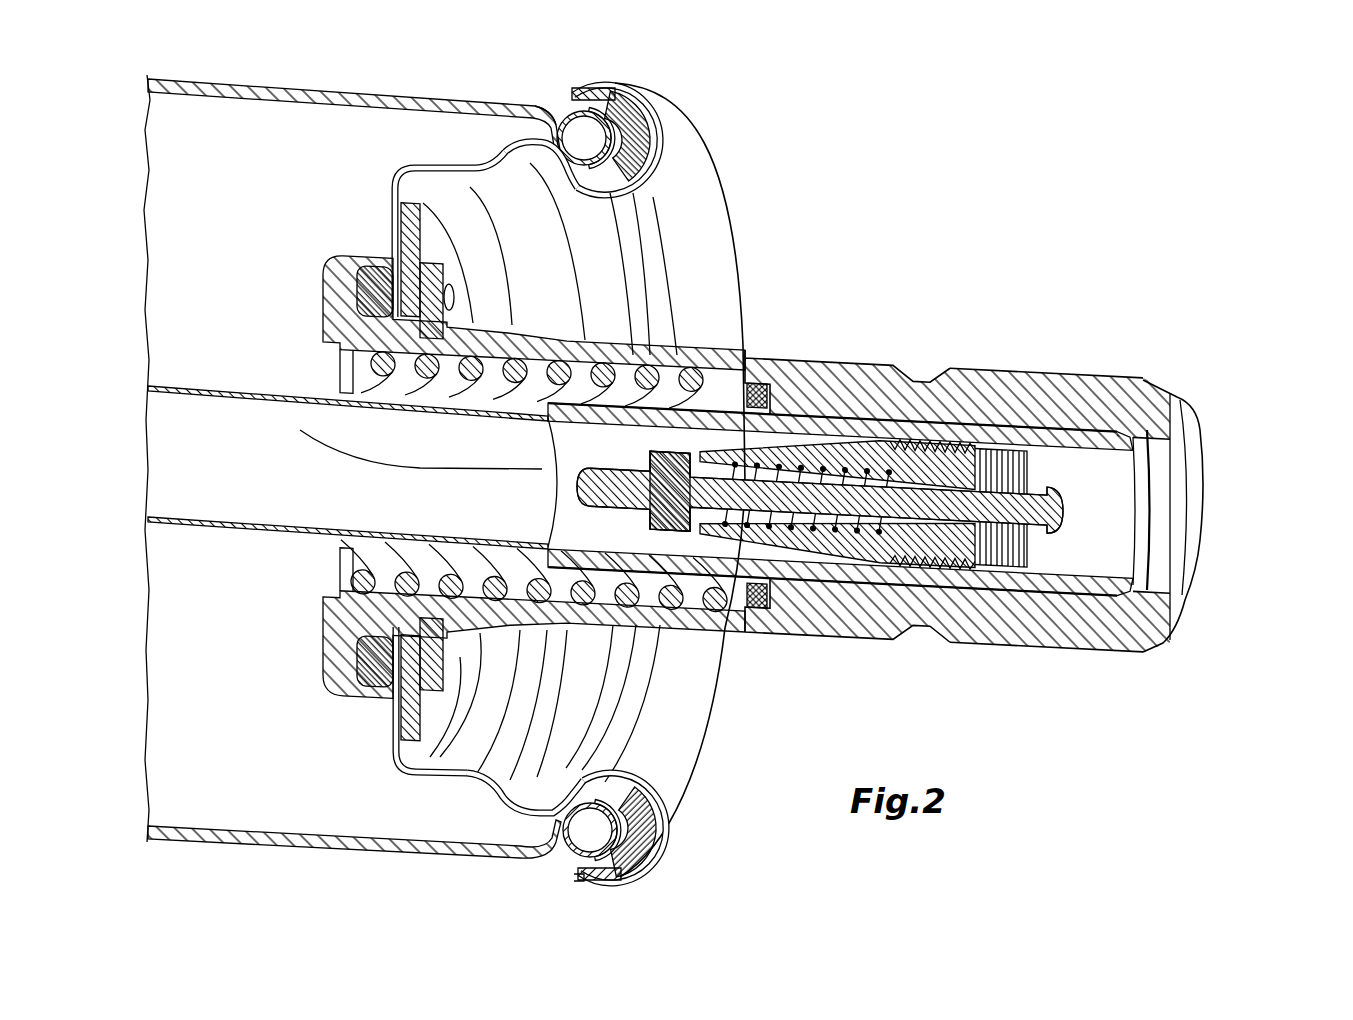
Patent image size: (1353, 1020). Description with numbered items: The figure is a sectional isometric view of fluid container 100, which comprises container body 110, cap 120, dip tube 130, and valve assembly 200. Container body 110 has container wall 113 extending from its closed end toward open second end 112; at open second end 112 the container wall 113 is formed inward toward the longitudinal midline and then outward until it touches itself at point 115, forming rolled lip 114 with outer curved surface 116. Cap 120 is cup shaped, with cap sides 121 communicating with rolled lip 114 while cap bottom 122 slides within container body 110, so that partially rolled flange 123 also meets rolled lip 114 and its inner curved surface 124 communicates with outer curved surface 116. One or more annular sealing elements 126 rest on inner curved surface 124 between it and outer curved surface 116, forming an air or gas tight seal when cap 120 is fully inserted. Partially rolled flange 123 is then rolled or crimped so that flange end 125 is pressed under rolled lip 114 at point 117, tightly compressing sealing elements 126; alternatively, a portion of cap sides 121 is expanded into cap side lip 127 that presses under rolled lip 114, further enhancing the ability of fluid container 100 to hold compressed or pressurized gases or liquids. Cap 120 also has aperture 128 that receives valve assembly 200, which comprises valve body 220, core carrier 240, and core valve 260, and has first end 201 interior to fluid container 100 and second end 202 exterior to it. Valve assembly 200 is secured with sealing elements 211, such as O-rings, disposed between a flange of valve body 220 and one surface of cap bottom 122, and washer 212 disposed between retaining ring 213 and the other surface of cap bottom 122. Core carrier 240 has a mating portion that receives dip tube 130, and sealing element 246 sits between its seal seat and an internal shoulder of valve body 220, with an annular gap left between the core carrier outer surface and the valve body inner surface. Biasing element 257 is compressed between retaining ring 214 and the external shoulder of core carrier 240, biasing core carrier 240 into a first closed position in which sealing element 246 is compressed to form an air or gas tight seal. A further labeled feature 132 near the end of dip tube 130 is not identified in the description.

The fluid container 100 is at (855, 166).
The container body 110 is at (216, 793).
The open second end 112 is at (518, 128).
The container wall 113 is at (305, 846).
The rolled lip 114 is at (556, 118).
The point 115 is at (600, 112).
The outer curved surface 116 is at (645, 142).
The point 117 is at (574, 121).
The cap 120 is at (718, 192).
The cap sides 121 is at (445, 790).
The cap bottom 122 is at (392, 726).
The partially rolled flange 123 is at (650, 824).
The inner curved surface 124 is at (603, 870).
The flange end 125 is at (577, 876).
The sealing elements 126 is at (648, 800).
The cap side lip 127 is at (515, 823).
The aperture 128 is at (360, 622).
The dip tube 130 is at (185, 393).
The tube end 132 is at (305, 428).
The valve assembly 200 is at (866, 372).
The first end 201 is at (320, 576).
The second end 202 is at (1213, 476).
The sealing elements 211 is at (378, 262).
The washer 212 is at (402, 742).
The retaining ring 213 is at (410, 195).
The retaining ring 214 is at (352, 547).
The valve body 220 is at (1112, 395).
The core carrier 240 is at (812, 588).
The sealing element 246 is at (756, 385).
The biasing element 257 is at (692, 372).
The core valve 260 is at (960, 563).